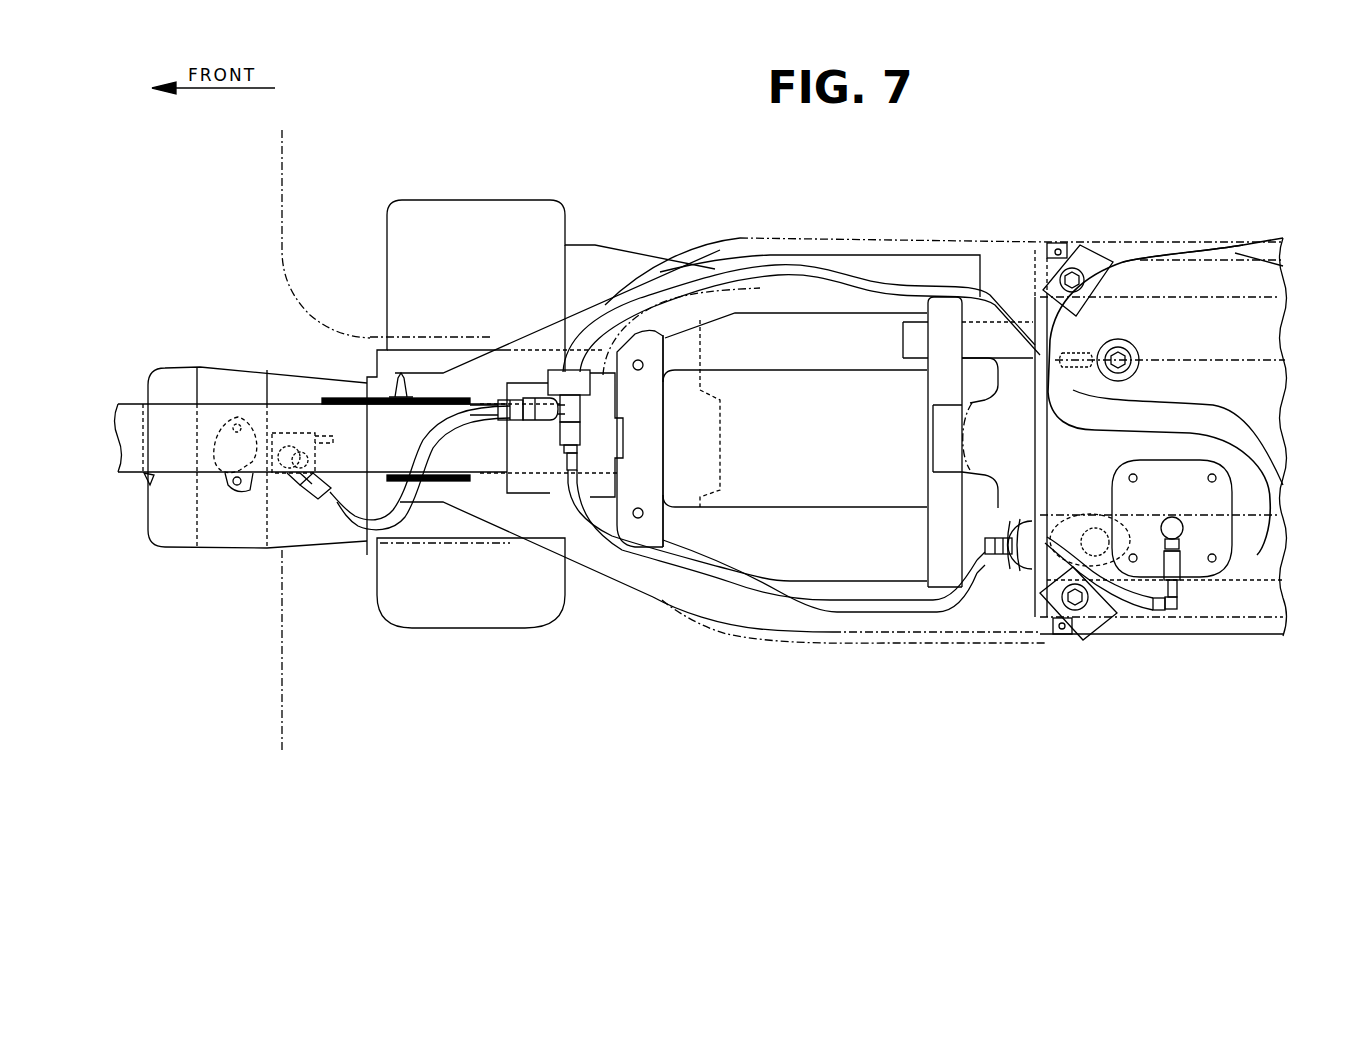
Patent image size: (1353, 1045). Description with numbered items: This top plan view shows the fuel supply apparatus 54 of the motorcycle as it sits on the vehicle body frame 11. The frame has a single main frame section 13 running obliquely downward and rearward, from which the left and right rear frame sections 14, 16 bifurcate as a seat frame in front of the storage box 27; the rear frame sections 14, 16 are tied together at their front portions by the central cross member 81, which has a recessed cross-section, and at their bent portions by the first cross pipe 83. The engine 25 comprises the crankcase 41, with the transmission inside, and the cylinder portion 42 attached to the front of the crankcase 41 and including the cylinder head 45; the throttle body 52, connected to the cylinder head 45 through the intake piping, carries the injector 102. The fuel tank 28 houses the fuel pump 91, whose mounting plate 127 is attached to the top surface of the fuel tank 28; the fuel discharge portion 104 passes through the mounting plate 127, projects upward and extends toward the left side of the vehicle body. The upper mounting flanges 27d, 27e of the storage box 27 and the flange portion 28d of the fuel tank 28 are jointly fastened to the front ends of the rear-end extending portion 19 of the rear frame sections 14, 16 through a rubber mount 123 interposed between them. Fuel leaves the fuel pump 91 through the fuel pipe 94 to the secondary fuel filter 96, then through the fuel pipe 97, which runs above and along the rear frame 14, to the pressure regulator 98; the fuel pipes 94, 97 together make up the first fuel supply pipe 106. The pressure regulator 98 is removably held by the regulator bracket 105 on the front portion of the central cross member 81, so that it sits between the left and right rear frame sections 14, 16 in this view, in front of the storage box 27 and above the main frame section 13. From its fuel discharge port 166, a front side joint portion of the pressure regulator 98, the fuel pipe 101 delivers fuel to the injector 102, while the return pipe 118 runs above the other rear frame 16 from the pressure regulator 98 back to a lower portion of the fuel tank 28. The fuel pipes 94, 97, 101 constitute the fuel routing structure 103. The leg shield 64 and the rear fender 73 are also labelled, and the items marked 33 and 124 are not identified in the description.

The vehicle body frame 11 is at (152, 487).
The main frame section 13 is at (490, 455).
The rear frame section 14 is at (905, 630).
The rear frame section 16 is at (883, 265).
The rear-end extending portion 19 is at (1193, 258).
The engine 25 is at (428, 632).
The storage box 27 is at (707, 249).
The upper mounting flange 27d is at (1037, 645).
The upper mounting flange 27e is at (1035, 240).
The fuel tank 28 is at (1251, 247).
The flange portion 28d is at (1157, 248).
The bolt 33 is at (1258, 354).
The crankcase 41 is at (383, 363).
The cylinder portion 42 is at (172, 366).
The cylinder head 45 is at (220, 538).
The throttle body 52 is at (300, 437).
The fuel supply apparatus 54 is at (755, 596).
The leg shield 64 is at (287, 713).
The rear fender 73 is at (1012, 428).
The central cross member 81 is at (622, 512).
The first cross pipe 83 is at (948, 575).
The fuel pump 91 is at (1218, 557).
The fuel pipe 94 is at (1150, 612).
The secondary fuel filter 96 is at (1017, 572).
The fuel pipe 97 is at (833, 606).
The pressure regulator 98 is at (555, 368).
The fuel pipe 101 is at (400, 520).
The injector 102 is at (297, 495).
The fuel routing structure 103 is at (1055, 812).
The fuel discharge portion 104 is at (1180, 545).
The regulator bracket 105 is at (606, 375).
The first fuel supply pipe 106 is at (868, 768).
The return pipe 118 is at (817, 266).
The rubber mount 123 is at (1097, 260).
The bolt 124 is at (1076, 267).
The mounting plate 127 is at (1202, 563).
The fuel discharge port 166 is at (565, 603).